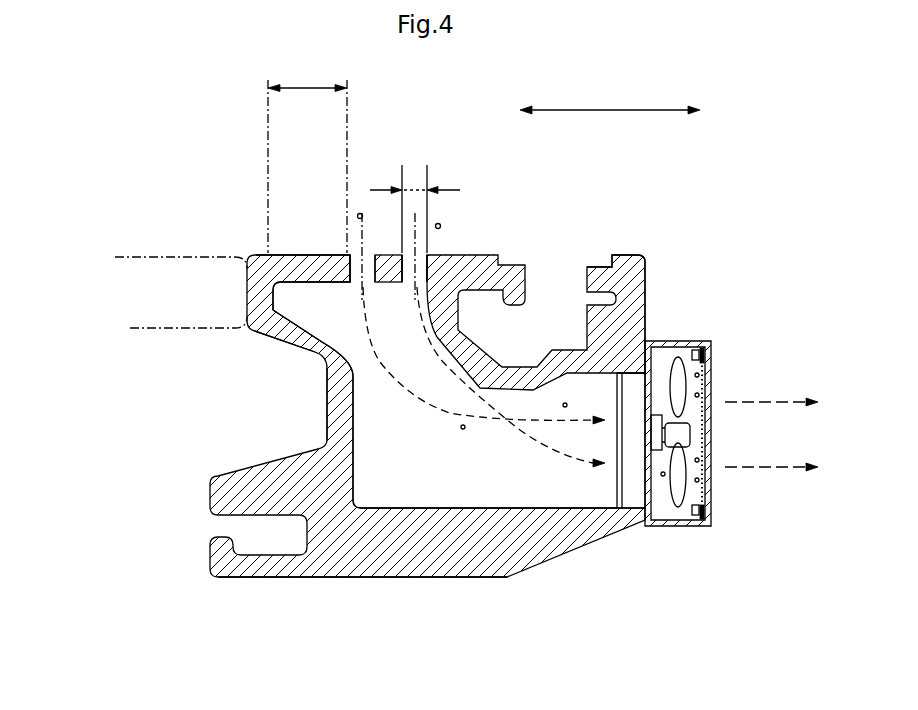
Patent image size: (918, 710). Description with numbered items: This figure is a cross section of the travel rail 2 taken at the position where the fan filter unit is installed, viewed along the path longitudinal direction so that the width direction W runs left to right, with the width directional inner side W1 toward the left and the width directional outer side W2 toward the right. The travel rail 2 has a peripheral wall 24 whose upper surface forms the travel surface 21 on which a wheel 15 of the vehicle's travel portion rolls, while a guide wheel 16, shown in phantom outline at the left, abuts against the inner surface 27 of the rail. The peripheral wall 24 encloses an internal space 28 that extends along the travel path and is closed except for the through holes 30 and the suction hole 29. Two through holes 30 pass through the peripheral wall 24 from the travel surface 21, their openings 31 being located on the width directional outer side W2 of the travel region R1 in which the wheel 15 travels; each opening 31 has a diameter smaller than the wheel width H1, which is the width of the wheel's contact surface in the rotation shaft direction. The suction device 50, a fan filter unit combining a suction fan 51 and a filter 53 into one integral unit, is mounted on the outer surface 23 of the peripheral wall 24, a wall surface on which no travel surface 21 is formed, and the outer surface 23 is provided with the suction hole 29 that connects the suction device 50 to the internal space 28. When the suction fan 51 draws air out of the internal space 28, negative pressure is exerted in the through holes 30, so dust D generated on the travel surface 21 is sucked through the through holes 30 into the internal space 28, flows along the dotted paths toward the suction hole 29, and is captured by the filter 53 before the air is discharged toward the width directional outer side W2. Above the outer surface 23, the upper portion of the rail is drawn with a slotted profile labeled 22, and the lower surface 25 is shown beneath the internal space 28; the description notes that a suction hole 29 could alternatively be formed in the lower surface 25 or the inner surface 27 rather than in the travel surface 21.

The travel rail 2 is at (213, 498).
The wheel 15 is at (283, 140).
The guide wheel 16 is at (155, 267).
The travel surface 21 is at (260, 246).
The slot 22 is at (566, 274).
The outer surface 23 is at (656, 320).
The peripheral wall 24 is at (300, 345).
The lower surface 25 is at (365, 588).
The inner surface 27 is at (317, 411).
The internal space 28 is at (474, 494).
The suction hole 29 is at (623, 485).
The through hole 30 is at (410, 293).
The opening 31 is at (420, 246).
The suction device 50 is at (713, 333).
The suction fan 51 is at (681, 500).
The filter 53 is at (705, 492).
The wheel width H1 is at (307, 157).
The travel region R1 is at (304, 241).
The dust D is at (361, 212).
The width direction W is at (610, 93).
The width directional inner side W1 is at (497, 114).
The width directional outer side W2 is at (732, 115).